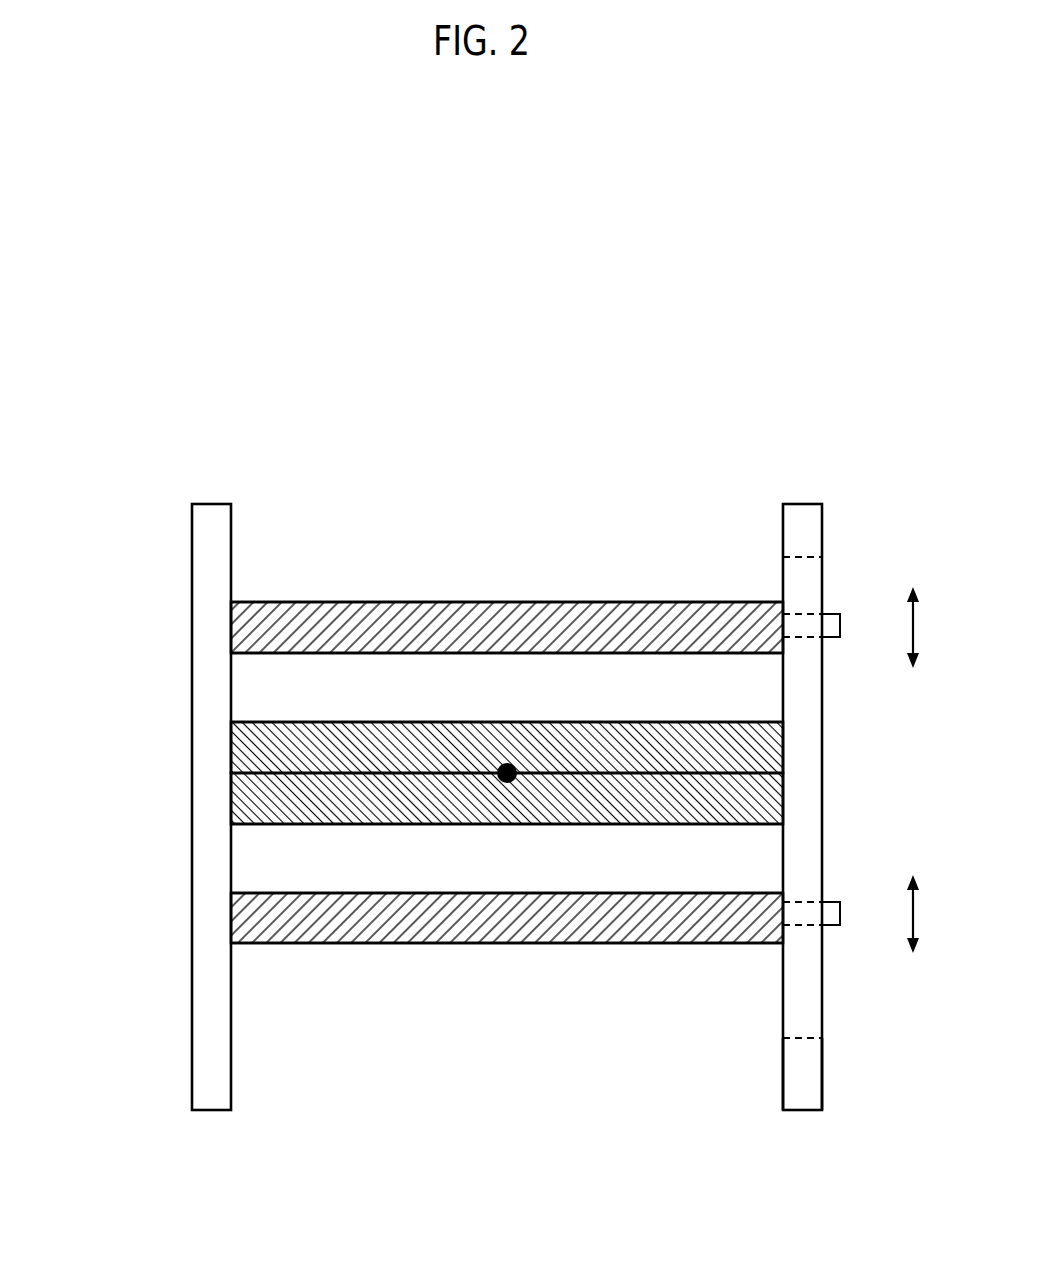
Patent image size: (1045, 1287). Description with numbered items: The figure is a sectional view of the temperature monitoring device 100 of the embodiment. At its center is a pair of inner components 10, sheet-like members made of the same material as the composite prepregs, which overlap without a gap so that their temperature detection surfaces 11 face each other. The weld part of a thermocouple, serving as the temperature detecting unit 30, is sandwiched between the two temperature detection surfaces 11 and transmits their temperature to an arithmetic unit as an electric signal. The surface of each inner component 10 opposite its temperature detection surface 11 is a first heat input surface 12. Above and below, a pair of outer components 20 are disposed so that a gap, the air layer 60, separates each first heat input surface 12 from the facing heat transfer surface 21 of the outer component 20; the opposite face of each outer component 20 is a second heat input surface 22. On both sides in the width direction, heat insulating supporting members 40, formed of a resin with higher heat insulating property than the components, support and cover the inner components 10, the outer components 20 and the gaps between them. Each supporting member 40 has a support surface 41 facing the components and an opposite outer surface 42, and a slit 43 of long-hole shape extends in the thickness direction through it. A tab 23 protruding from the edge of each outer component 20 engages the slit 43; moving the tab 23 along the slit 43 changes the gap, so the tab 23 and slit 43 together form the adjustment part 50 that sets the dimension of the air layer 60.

The temperature monitoring device 100 is at (340, 365).
The inner component 10 is at (231, 748).
The temperature detection surface 11 is at (557, 774).
The first heat input surface 12 is at (645, 722).
The outer component 20 is at (231, 627).
The heat transfer surface 21 is at (502, 653).
The second heat input surface 22 is at (423, 602).
The tab 23 is at (838, 637).
The temperature detecting unit 30 is at (500, 764).
The heat insulating supporting member 40 is at (210, 504).
The support surface 41 is at (783, 1068).
The outer surface 42 is at (820, 1058).
The slit 43 is at (797, 1038).
The adjustment part 50 is at (880, 532).
The air layer 60 is at (312, 866).